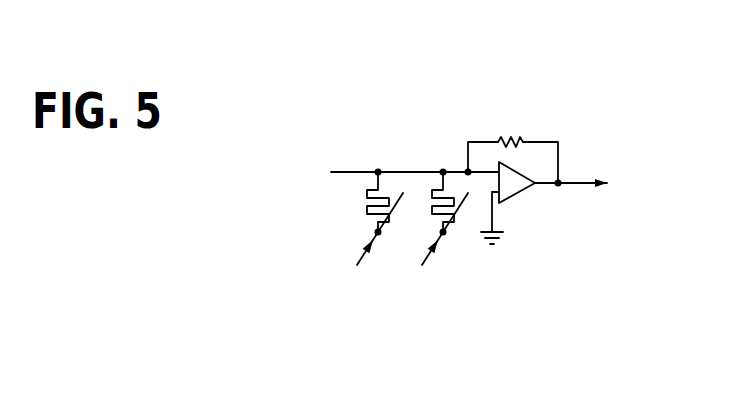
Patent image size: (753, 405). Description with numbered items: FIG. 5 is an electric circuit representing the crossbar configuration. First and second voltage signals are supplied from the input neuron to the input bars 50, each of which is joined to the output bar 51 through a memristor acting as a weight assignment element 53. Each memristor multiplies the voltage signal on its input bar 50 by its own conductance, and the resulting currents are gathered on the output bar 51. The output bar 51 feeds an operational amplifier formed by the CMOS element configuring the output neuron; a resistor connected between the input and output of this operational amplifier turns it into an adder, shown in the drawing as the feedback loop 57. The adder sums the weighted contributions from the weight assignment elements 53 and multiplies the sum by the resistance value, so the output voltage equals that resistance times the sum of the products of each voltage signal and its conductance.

The input bar 50 is at (360, 262).
The output bar 51 is at (334, 172).
The weight assignment element 53 is at (456, 206).
The summing amplifier with feedback resistor 57 is at (552, 130).